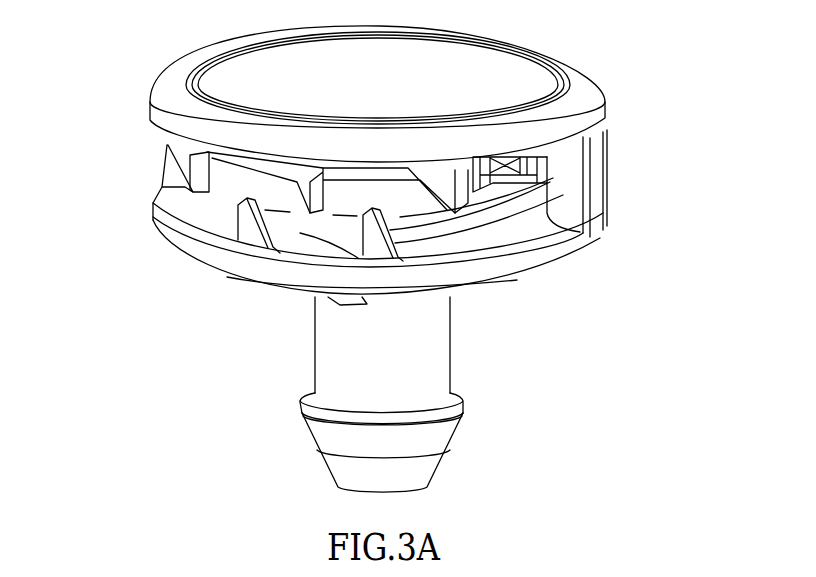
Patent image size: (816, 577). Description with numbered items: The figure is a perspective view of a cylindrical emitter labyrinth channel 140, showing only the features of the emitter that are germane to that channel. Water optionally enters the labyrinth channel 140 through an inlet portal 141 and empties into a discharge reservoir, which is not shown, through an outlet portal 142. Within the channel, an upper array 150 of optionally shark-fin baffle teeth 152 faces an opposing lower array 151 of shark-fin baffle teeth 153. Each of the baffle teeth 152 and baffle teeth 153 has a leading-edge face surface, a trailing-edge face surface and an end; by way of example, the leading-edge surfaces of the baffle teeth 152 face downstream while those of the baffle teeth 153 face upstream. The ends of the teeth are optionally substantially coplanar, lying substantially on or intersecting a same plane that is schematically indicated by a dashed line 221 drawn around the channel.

The labyrinth channel 140 is at (247, 185).
The inlet portal 141 is at (507, 186).
The outlet portal 142 is at (172, 170).
The upper array 150 is at (452, 117).
The lower array 151 is at (446, 280).
The shark-fin baffle teeth 152 is at (186, 156).
The shark-fin baffle teeth 153 is at (247, 235).
The dashed line 221 is at (390, 190).